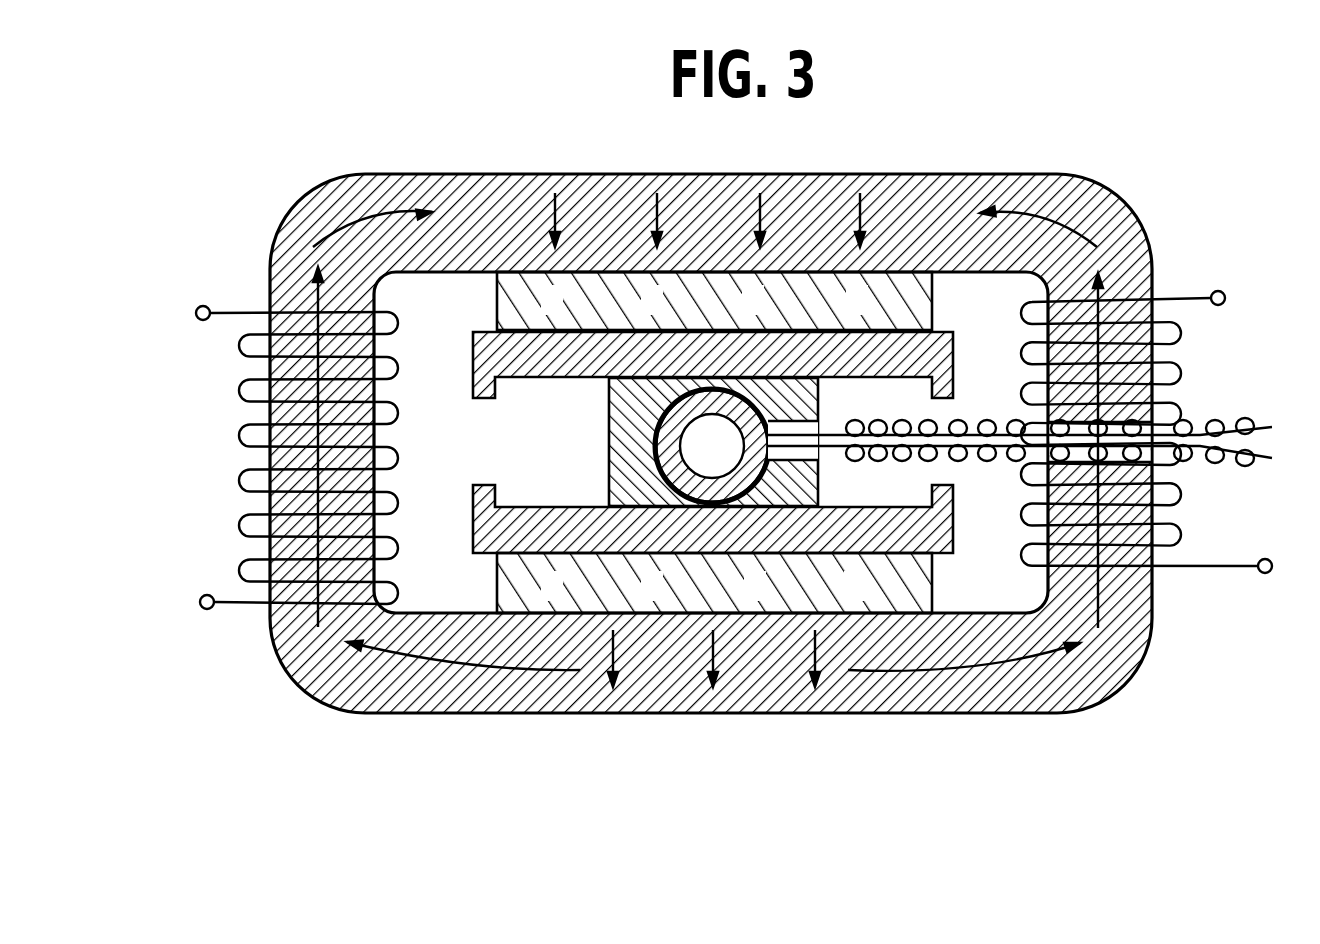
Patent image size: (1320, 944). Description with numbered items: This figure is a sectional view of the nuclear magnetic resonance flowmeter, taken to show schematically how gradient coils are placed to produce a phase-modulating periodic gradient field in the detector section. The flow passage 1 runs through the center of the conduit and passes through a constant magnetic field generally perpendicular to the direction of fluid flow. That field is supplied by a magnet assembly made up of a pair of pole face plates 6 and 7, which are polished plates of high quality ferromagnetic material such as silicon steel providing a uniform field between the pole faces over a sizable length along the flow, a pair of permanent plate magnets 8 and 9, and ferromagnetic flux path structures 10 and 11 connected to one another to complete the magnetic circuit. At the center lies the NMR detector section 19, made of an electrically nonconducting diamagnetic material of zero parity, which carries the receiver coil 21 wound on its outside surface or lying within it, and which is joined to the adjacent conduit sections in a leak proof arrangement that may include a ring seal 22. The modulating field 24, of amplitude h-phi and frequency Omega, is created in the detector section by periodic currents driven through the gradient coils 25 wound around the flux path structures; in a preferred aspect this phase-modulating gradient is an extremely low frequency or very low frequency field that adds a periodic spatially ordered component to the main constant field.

The flow passage 1 is at (718, 450).
The pole face plate 6 is at (958, 358).
The pole face plate 7 is at (953, 520).
The permanent plate magnet 8 is at (787, 297).
The permanent plate magnet 9 is at (787, 597).
The flux path structure 10 is at (620, 197).
The flux path structure 11 is at (937, 677).
The NMR detector section 19 is at (712, 475).
The receiver coil 21 is at (643, 443).
The ring seal 22 is at (623, 412).
The modulating field 24 is at (1082, 218).
The gradient coils 25 is at (207, 306).